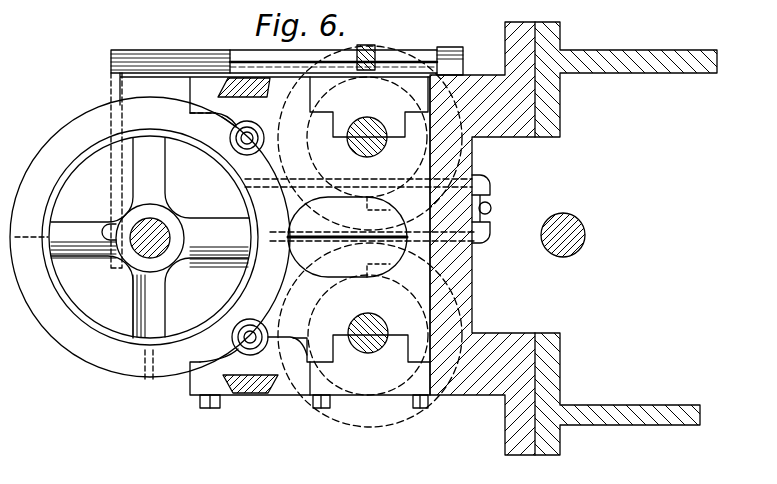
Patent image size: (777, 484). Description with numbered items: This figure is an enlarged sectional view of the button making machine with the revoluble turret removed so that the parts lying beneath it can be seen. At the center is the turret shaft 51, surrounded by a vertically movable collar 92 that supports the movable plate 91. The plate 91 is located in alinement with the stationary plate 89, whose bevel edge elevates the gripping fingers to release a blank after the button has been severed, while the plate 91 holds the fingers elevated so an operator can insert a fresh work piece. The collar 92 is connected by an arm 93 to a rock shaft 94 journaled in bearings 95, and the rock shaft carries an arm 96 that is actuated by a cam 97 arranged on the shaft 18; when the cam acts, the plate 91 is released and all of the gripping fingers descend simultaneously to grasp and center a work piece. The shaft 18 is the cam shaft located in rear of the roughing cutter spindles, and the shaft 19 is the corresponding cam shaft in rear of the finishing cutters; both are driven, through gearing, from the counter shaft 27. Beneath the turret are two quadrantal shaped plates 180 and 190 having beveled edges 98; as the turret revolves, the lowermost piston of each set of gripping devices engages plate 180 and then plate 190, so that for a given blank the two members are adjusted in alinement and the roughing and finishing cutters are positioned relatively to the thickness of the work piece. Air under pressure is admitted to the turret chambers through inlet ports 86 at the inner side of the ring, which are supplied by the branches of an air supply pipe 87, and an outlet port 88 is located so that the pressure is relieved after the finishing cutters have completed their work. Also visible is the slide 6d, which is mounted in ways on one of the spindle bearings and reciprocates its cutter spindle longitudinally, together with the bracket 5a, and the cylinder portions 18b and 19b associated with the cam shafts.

The bearings 95 is at (152, 62).
The rock shaft 94 is at (289, 62).
The arm 96 is at (373, 48).
The arm 93 is at (115, 88).
The upper bracket 5a is at (244, 97).
The slide 6d is at (258, 390).
The cam 97 is at (369, 107).
The shaft 18 is at (368, 140).
The upper cylinder 18b is at (472, 157).
The shaft 19 is at (367, 348).
The lower cylinder 19b is at (465, 290).
The air supply pipe 87 is at (491, 208).
The counter shaft 27 is at (568, 250).
The outlet port 88 is at (260, 187).
The inlet ports 86 is at (273, 241).
The stationary plate 89 is at (150, 238).
The movable plate 91 is at (92, 180).
The quadrantal shaped plate 180 is at (207, 180).
The quadrantal shaped plate 190 is at (206, 297).
The beveled edges 98 is at (163, 155).
The shaft 51 is at (162, 238).
The collar 92 is at (151, 213).